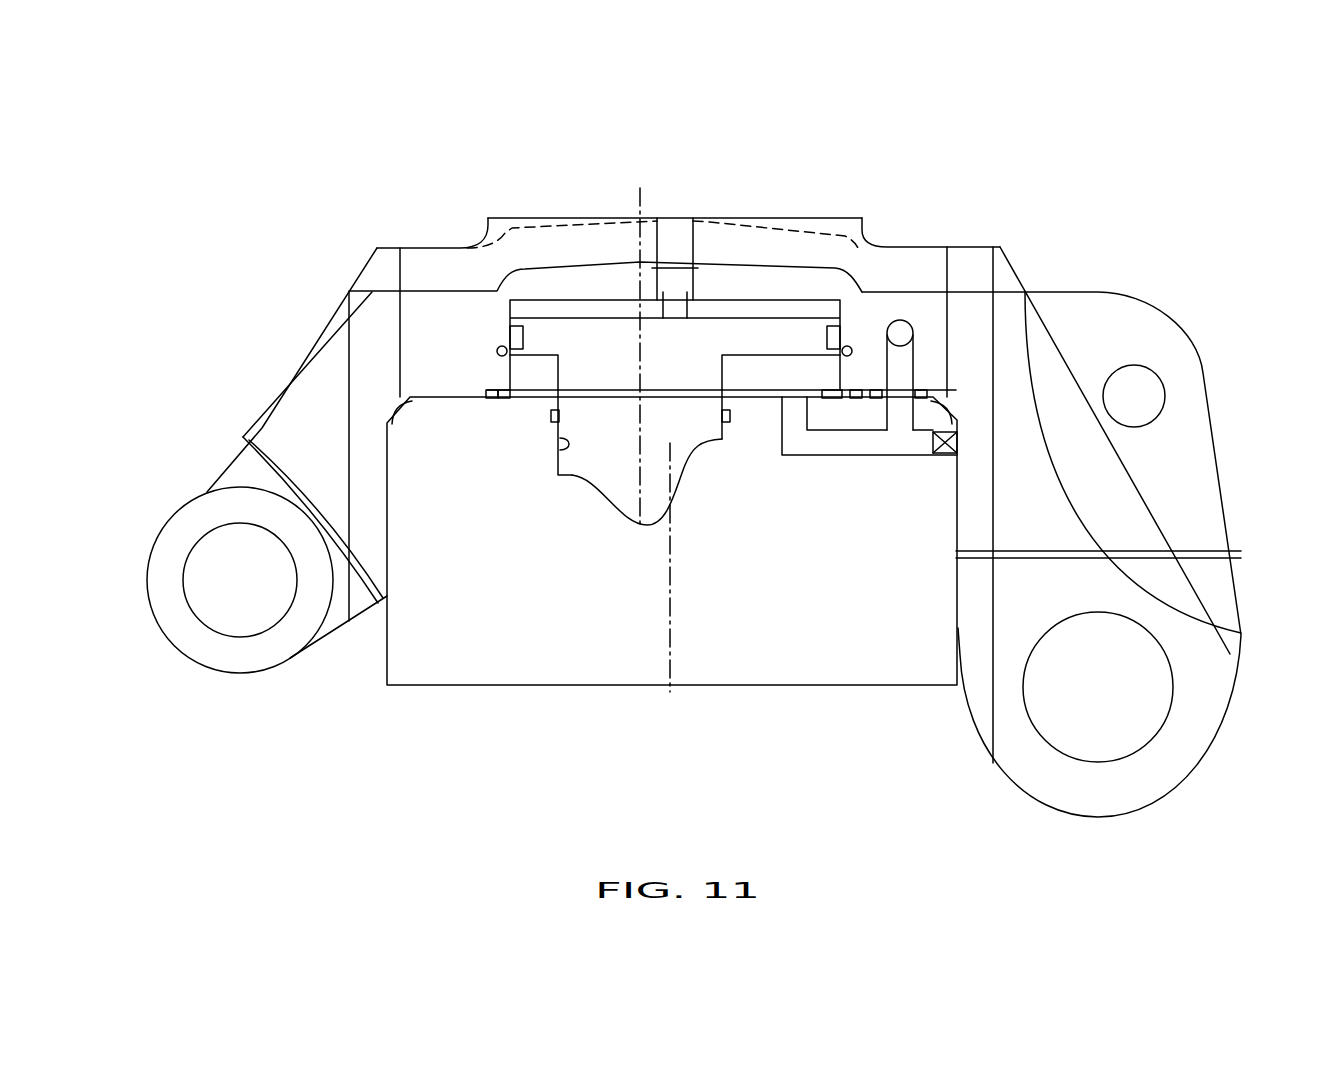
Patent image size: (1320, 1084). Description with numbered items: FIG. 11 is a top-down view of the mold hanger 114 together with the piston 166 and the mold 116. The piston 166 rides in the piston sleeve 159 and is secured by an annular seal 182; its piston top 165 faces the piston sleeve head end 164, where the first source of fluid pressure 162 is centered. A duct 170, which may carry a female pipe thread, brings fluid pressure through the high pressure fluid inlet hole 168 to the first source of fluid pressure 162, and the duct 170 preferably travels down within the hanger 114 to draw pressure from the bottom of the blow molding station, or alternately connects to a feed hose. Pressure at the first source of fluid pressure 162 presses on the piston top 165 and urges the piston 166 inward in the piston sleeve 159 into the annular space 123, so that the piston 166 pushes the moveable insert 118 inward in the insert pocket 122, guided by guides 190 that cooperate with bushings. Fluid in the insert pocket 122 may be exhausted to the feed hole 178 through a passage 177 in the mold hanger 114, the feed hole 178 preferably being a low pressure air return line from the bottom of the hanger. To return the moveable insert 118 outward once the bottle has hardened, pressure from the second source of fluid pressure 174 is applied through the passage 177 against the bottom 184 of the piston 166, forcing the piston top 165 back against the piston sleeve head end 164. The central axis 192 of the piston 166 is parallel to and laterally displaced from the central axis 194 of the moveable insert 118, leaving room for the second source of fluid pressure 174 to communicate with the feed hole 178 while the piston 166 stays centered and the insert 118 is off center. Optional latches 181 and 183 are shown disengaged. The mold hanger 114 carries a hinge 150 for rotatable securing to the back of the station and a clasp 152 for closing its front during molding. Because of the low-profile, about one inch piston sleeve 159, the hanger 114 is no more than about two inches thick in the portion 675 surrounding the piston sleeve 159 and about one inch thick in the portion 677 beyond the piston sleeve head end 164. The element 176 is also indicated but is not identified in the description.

The mold hanger 114 is at (312, 337).
The mold 116 is at (597, 686).
The moveable insert 118 is at (560, 467).
The insert pocket 122 is at (562, 440).
The annular space 123 is at (508, 382).
The hinge 150 is at (1098, 818).
The clasp 152 is at (243, 674).
The piston sleeve 159 is at (505, 364).
The first source of fluid pressure 162 is at (712, 318).
The piston sleeve head end 164 is at (745, 318).
The piston top 165 is at (728, 318).
The piston 166 is at (847, 346).
The high pressure fluid inlet hole 168 is at (645, 283).
The duct 170 is at (657, 242).
The second source of fluid pressure 174 is at (782, 395).
The cover 176 is at (520, 230).
The passage 177 is at (842, 372).
The feed hole 178 is at (915, 323).
The latch 181 is at (500, 346).
The annular seal 182 is at (524, 333).
The latch 183 is at (847, 368).
The bottom of piston 184 is at (541, 357).
The guides 190 is at (551, 415).
The central axis of piston 192 is at (640, 458).
The central axis of moveable insert 194 is at (677, 547).
The portion surrounding piston sleeve 675 is at (495, 218).
The portion beyond piston sleeve head end 677 is at (540, 220).